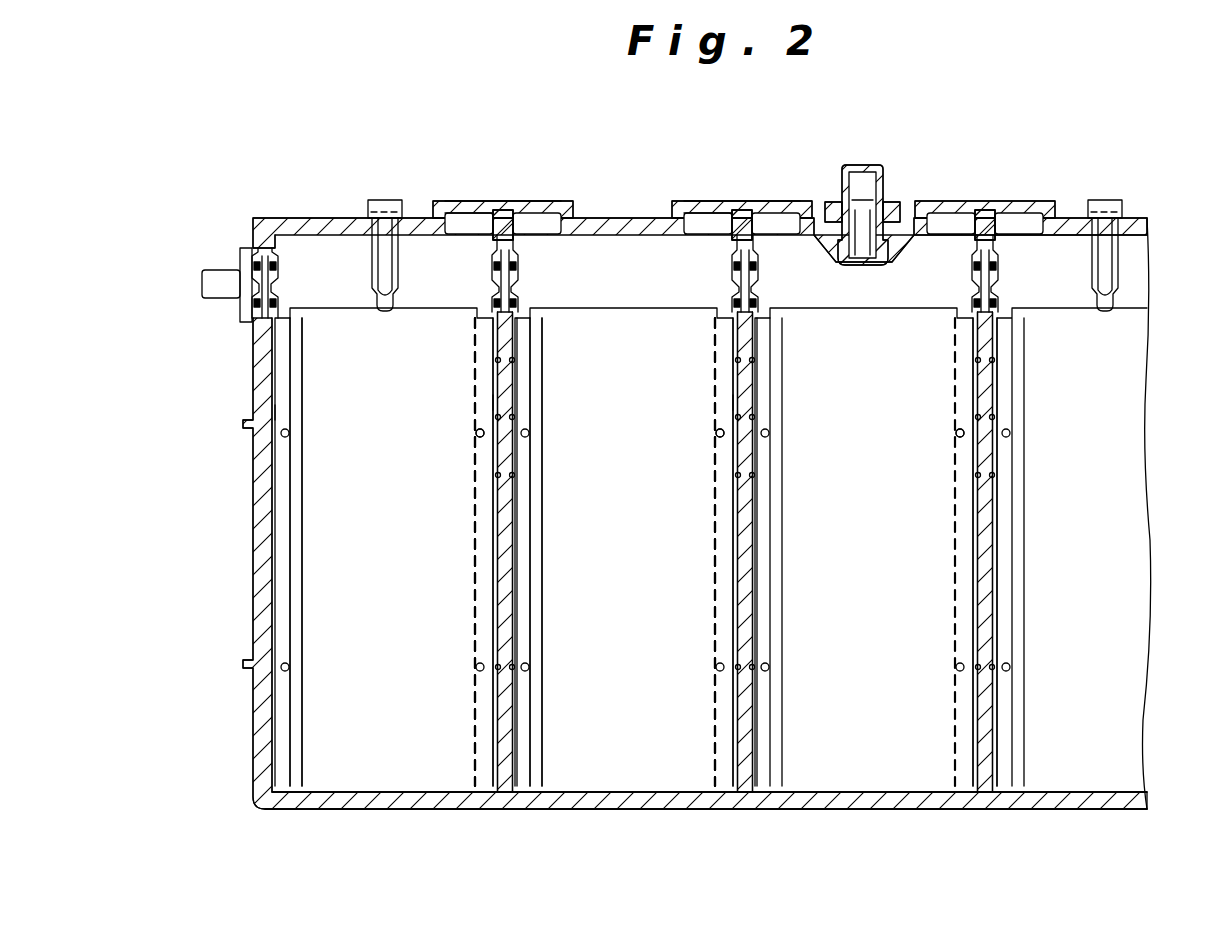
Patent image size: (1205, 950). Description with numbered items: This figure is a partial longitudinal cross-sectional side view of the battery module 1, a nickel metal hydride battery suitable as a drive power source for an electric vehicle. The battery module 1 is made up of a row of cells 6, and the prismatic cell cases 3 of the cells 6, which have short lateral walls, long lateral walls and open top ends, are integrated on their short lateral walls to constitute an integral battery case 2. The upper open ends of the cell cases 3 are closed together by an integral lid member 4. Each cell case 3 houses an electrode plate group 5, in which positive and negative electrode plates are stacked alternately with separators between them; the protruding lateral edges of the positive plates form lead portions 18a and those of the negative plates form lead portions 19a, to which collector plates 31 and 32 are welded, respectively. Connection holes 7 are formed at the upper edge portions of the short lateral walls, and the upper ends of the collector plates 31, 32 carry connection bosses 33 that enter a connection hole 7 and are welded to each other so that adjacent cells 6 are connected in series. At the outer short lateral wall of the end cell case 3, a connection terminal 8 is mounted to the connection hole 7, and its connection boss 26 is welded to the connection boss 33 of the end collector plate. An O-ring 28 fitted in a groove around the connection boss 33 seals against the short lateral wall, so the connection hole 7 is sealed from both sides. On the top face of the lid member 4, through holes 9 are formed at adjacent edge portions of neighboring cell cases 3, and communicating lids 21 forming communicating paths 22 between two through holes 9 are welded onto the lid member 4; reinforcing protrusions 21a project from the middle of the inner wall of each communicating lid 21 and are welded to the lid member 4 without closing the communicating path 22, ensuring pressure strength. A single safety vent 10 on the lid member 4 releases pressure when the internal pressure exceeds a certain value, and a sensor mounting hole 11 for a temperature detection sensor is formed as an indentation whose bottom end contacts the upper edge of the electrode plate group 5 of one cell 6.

The battery module 1 is at (212, 520).
The integral battery case 2 is at (248, 572).
The cell case 3 is at (371, 802).
The lid member 4 is at (625, 230).
The electrode plate group 5 is at (390, 561).
The cell 6 is at (422, 811).
The connection hole 7 is at (262, 312).
The connection terminal 8 is at (225, 283).
The through hole 9 is at (470, 242).
The safety vent 10 is at (882, 205).
The sensor mounting hole 11 is at (383, 262).
The lead portion 18a is at (297, 491).
The lead portion 19a is at (478, 489).
The communicating lid 21 is at (495, 215).
The reinforcing protrusion 21a is at (505, 228).
The communicating path 22 is at (525, 215).
The connection boss 26 is at (253, 302).
The O-ring 28 is at (252, 258).
The collector plate 31 is at (275, 403).
The collector plate 32 is at (478, 405).
The connection boss 33 is at (274, 292).